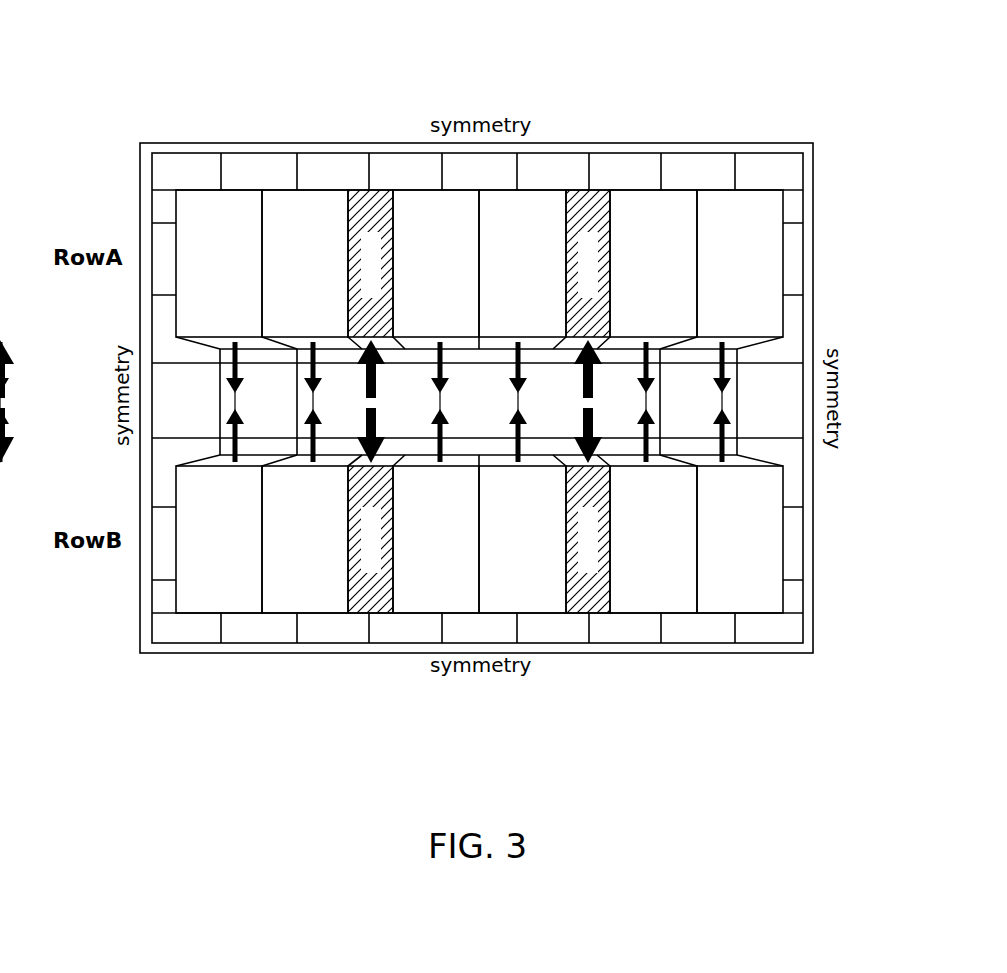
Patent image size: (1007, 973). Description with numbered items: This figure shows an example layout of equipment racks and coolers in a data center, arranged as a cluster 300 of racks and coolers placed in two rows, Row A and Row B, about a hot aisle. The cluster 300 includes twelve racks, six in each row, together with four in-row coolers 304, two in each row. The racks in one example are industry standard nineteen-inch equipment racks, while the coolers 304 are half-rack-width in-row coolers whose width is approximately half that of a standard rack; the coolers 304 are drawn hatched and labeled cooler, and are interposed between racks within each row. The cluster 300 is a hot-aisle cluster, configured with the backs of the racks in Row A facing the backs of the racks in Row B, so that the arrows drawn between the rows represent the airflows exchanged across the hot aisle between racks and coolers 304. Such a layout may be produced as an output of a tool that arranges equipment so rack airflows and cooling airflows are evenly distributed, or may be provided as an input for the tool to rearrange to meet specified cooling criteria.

The cluster 300 is at (721, 127).
The in-row cooler 304 is at (378, 193).